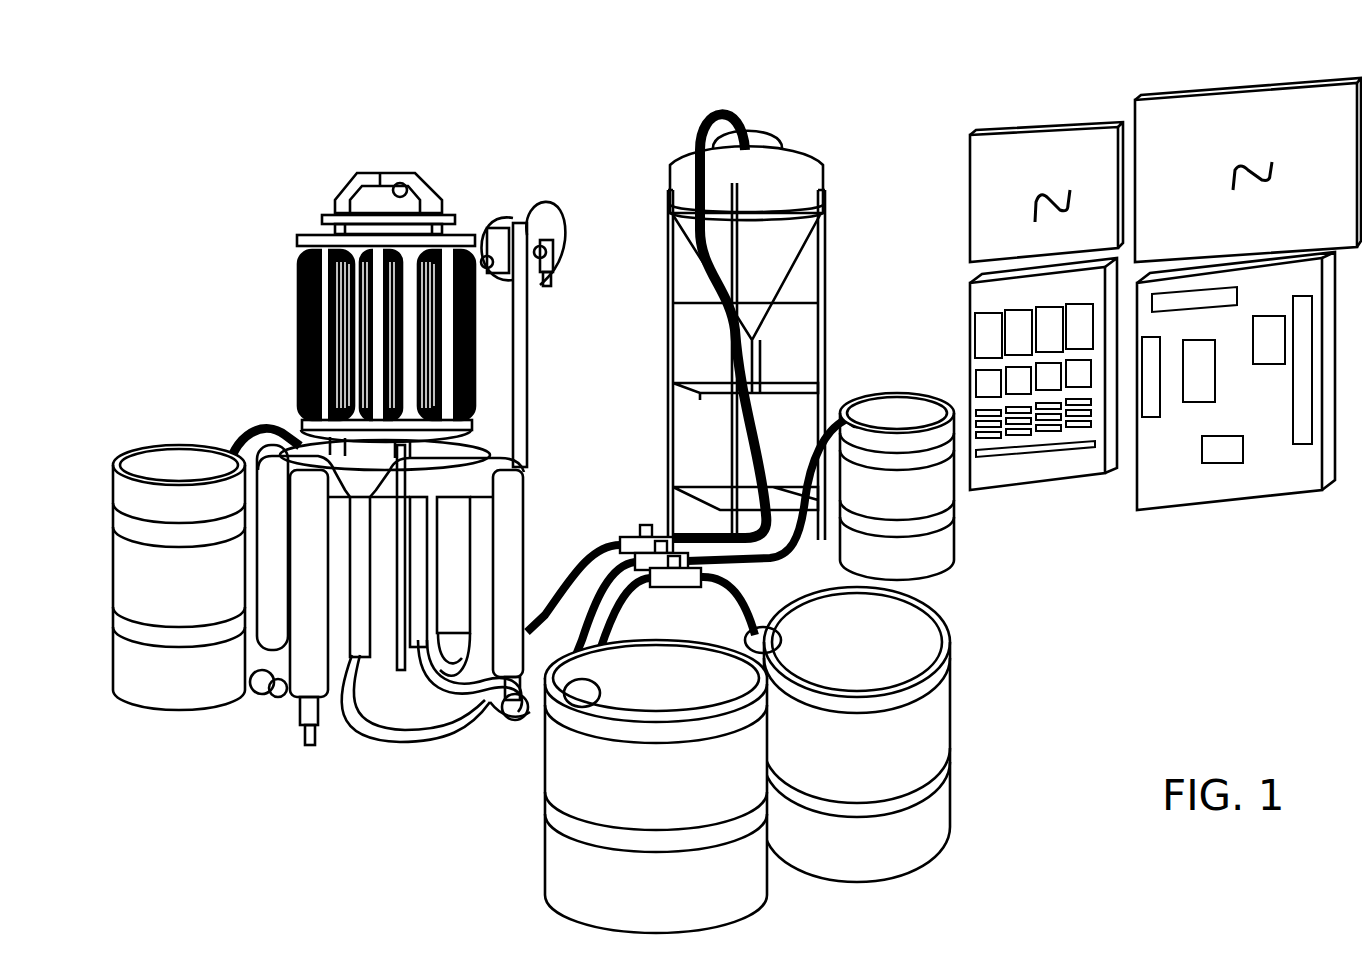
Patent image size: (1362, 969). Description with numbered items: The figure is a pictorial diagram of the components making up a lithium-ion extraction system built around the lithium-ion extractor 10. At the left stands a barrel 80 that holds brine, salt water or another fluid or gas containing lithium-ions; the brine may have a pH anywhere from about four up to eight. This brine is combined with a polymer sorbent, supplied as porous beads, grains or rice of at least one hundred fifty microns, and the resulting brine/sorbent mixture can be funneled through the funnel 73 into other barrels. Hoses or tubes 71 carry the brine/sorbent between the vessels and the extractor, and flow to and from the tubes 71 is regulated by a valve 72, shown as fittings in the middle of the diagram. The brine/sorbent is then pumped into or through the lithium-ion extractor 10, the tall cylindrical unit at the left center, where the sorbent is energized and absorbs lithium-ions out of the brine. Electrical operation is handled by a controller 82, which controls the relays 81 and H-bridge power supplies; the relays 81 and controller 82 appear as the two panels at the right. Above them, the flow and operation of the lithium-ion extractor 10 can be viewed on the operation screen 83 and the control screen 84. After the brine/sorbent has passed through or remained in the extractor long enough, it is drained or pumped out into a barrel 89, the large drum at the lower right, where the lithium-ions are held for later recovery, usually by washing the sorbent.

The lithium-ion extractor 10 is at (290, 145).
The tube 71 is at (628, 588).
The valve 72 is at (637, 533).
The funnel 73 is at (670, 165).
The barrel 80 is at (166, 443).
The relays 81 is at (1028, 483).
The controller 82 is at (1223, 503).
The operation screen 83 is at (1047, 196).
The control screen 84 is at (1238, 168).
The barrel 89 is at (950, 710).